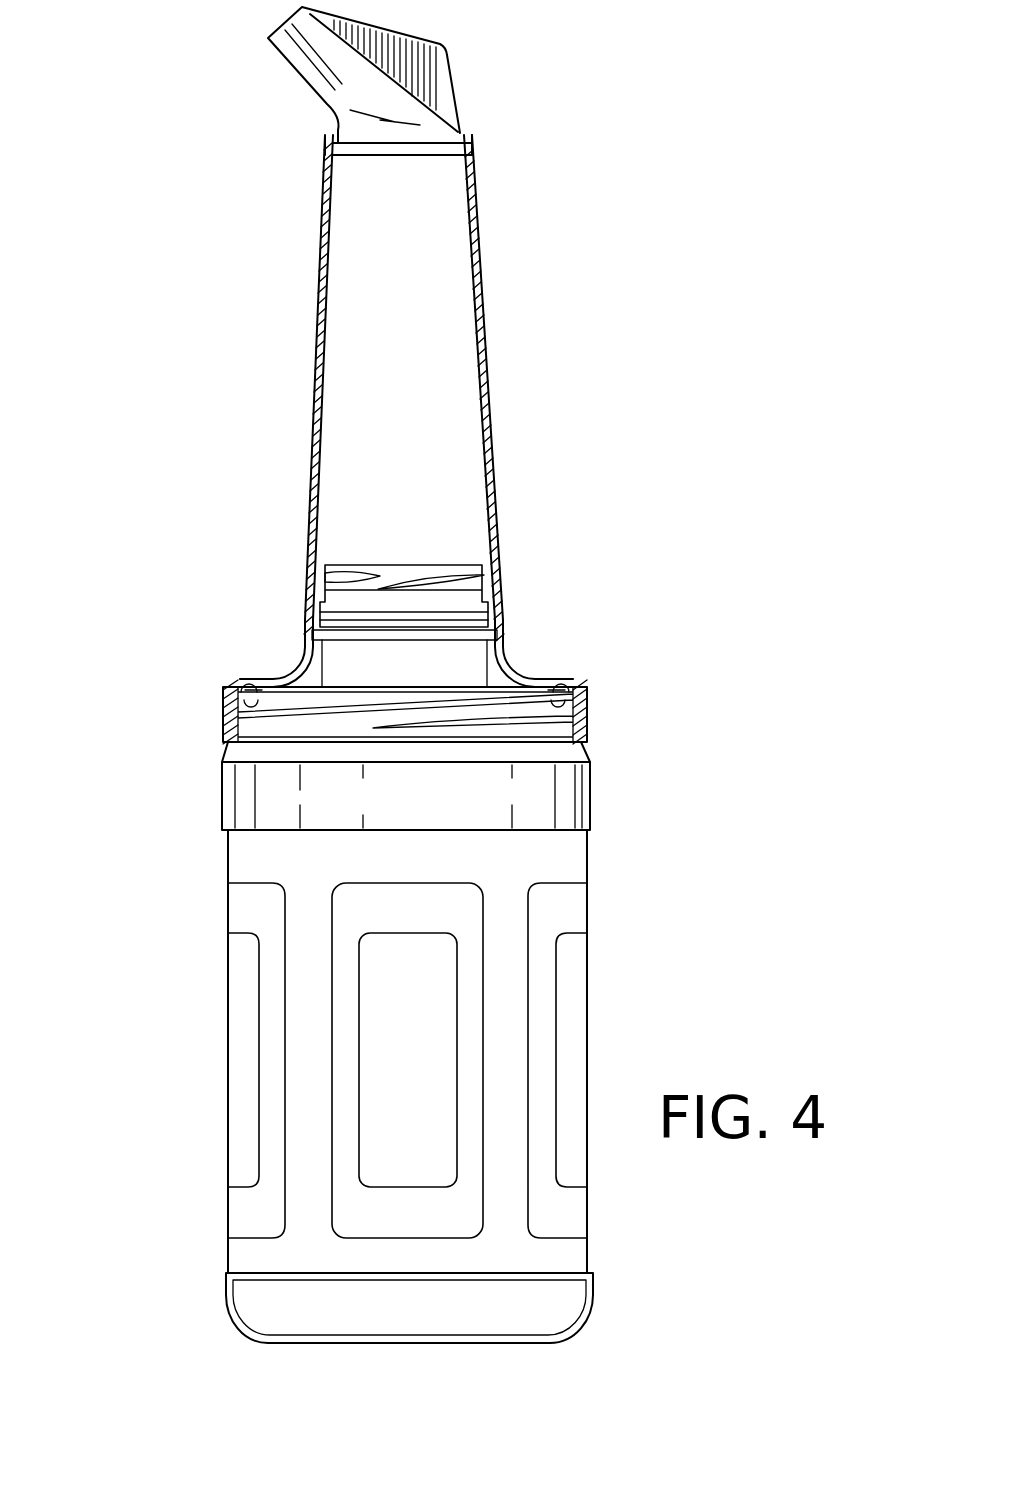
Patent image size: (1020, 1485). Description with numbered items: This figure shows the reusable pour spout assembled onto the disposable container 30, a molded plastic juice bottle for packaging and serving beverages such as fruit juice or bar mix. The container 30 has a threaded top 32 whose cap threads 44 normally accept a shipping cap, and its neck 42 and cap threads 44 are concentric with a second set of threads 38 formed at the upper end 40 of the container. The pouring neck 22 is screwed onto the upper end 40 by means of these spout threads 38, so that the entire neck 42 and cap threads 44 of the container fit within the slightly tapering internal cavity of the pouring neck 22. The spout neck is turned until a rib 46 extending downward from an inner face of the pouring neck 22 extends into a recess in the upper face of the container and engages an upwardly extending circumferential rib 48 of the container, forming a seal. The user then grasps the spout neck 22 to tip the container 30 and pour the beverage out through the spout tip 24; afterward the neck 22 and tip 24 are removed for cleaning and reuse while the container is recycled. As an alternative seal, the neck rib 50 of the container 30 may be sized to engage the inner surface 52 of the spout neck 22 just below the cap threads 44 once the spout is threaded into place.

The pouring neck 22 is at (486, 290).
The spout tip 24 is at (452, 78).
The container 30 is at (170, 872).
The threaded top 32 is at (360, 565).
The second set of threads 38 is at (587, 712).
The upper end 40 is at (245, 663).
The neck 42 is at (478, 673).
The cap threads 44 is at (325, 578).
The rib 46 is at (257, 722).
The circumferential rib 48 is at (250, 692).
The neck rib 50 is at (500, 607).
The inner surface 52 is at (490, 493).